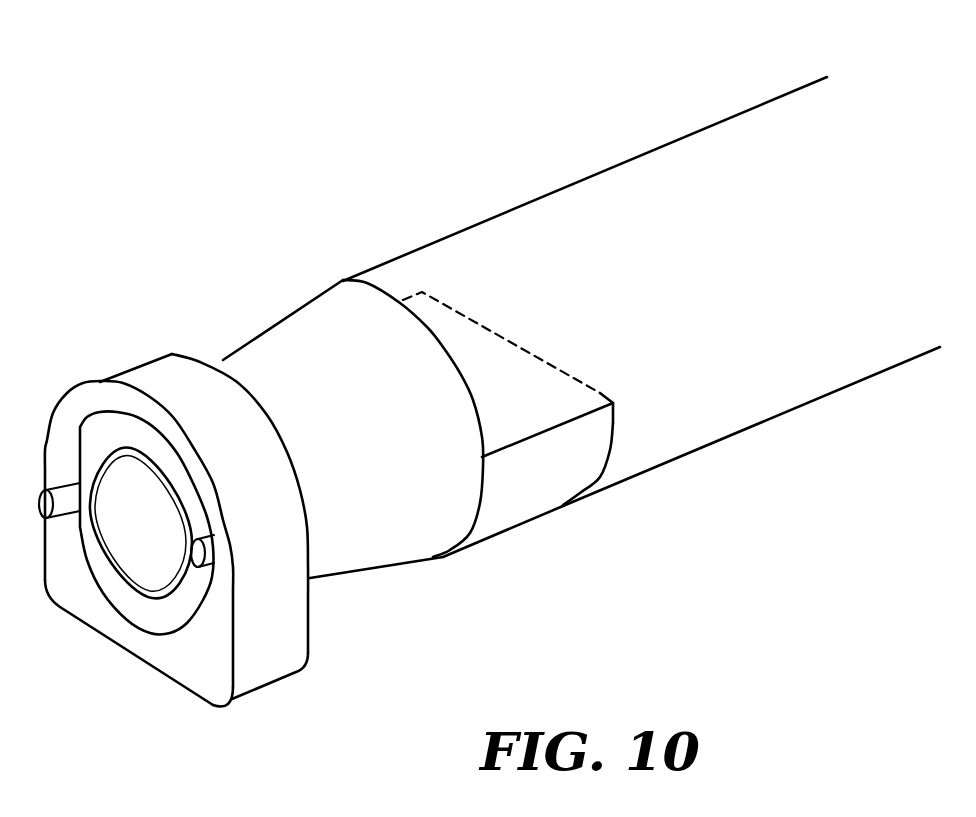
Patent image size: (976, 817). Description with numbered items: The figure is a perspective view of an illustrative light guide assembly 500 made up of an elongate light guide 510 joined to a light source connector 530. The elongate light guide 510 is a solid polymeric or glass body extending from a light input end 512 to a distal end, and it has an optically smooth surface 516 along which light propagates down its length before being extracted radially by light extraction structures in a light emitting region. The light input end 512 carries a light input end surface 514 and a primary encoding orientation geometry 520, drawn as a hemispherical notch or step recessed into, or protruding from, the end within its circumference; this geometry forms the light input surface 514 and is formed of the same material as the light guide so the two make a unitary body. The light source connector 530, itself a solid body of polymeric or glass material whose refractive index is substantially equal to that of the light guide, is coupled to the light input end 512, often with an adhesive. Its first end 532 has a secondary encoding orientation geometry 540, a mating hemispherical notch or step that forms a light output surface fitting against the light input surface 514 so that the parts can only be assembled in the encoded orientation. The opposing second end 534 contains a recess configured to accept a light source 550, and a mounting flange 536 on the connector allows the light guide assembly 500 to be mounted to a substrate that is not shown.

The light guide assembly 500 is at (303, 101).
The elongate light guide 510 is at (653, 146).
The light input end 512 is at (665, 464).
The light input end surface 514 is at (422, 330).
The optically smooth surface 516 is at (768, 147).
The primary encoding orientation geometry 520 is at (443, 347).
The light source connector 530 is at (125, 356).
The first end 532 is at (560, 508).
The second end 534 is at (200, 667).
The mounting flange 536 is at (270, 682).
The secondary encoding orientation geometry 540 is at (336, 277).
The light source 550 is at (130, 550).